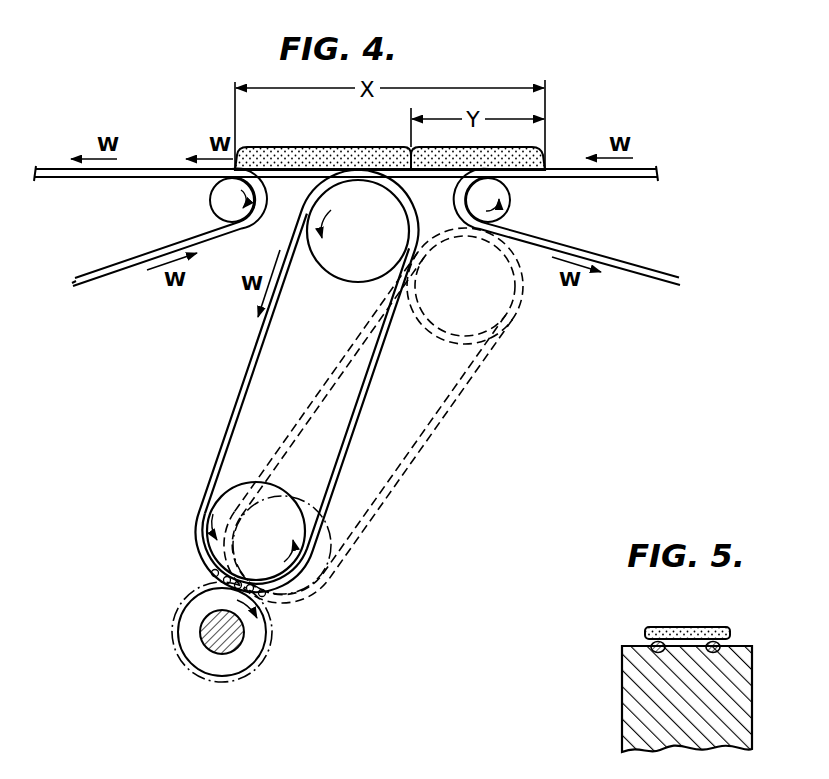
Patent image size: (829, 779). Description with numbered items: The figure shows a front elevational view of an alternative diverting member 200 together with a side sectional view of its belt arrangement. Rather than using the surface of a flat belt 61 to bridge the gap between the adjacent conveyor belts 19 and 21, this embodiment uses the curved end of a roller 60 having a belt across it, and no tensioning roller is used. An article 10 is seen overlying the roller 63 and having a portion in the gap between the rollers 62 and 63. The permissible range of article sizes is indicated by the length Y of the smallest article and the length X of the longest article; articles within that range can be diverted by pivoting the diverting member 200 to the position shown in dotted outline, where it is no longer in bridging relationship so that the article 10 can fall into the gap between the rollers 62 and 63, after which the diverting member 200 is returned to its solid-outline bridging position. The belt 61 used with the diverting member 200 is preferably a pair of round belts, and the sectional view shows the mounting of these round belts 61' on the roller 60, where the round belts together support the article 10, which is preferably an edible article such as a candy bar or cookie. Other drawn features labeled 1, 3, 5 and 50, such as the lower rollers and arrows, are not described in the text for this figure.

In FIG. 4, the abrasive belt sanding head 1 is at (240, 333).
In FIG. 4, the drive shaft 3 is at (258, 662).
In FIG. 4, the lower idler roller 5 is at (284, 497).
In FIG. 4, the article 10 is at (367, 143).
In FIG. 5, the article 10 is at (693, 622).
In FIG. 4, the conveyor belt 19 is at (54, 169).
In FIG. 4, the conveyor belt 21 is at (645, 169).
In FIG. 4, the drive roller 50 is at (205, 626).
In FIG. 4, the roller 60 is at (347, 221).
In FIG. 5, the roller 60 is at (622, 688).
In FIG. 4, the belt 61 is at (337, 386).
In FIG. 5, the round belt 61' is at (691, 636).
In FIG. 4, the roller 62 is at (210, 200).
In FIG. 4, the roller 63 is at (510, 197).
In FIG. 4, the diverting member 200 is at (231, 380).